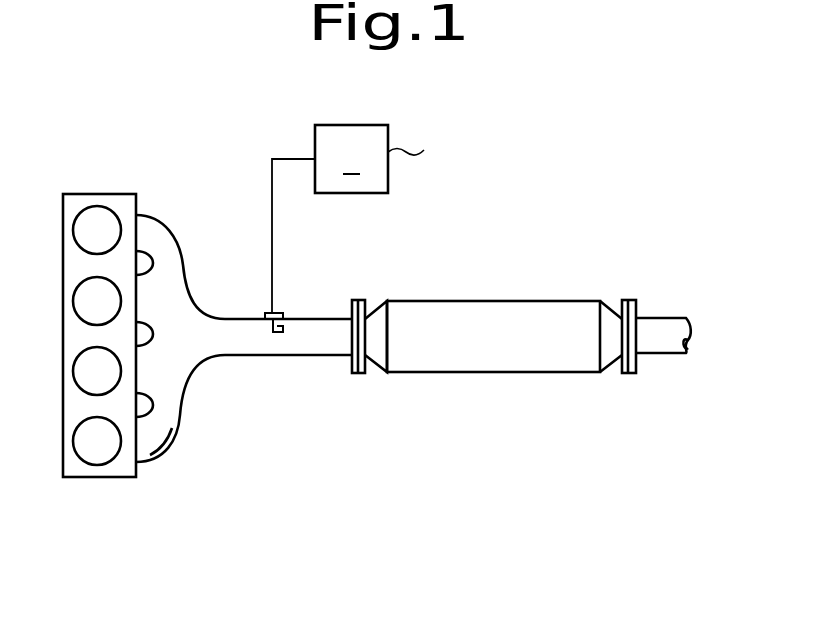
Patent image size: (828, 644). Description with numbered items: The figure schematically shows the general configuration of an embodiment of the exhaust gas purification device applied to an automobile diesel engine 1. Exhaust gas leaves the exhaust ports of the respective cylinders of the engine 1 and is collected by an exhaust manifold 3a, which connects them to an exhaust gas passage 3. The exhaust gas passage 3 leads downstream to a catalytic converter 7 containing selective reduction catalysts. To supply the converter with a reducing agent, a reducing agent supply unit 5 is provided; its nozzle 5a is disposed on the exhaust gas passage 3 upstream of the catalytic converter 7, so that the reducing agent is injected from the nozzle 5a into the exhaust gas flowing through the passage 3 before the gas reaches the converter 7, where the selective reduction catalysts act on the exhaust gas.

The automobile diesel engine 1 is at (108, 194).
The exhaust gas passage 3 is at (222, 349).
The exhaust manifold 3a is at (166, 425).
The reducing agent supply unit 5 is at (452, 219).
The nozzle 5a is at (277, 334).
The catalytic converter 7 is at (494, 300).